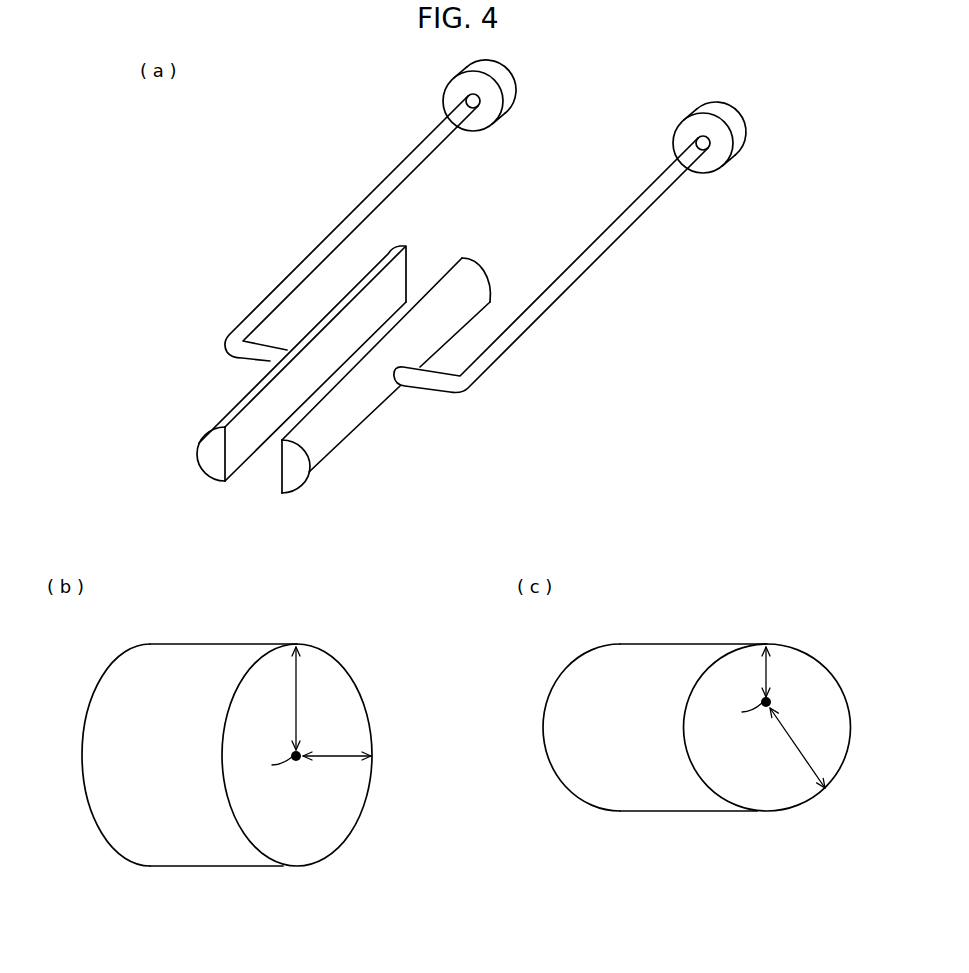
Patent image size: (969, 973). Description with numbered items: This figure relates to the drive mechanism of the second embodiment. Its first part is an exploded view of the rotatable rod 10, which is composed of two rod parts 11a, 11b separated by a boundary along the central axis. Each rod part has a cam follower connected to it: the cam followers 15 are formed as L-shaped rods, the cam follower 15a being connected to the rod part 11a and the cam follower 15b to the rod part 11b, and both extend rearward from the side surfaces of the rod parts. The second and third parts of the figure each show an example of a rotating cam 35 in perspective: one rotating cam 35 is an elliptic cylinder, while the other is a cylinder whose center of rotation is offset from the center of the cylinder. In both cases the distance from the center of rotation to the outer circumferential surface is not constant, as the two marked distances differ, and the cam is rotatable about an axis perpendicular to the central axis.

The rotatable rod 10 is at (316, 108).
The rod part 11a is at (295, 483).
The rod part 11b is at (213, 465).
The cam followers 15 is at (627, 163).
The cam follower 15a is at (683, 137).
The cam follower 15b is at (490, 115).
The rotating cam 35 is at (320, 627).